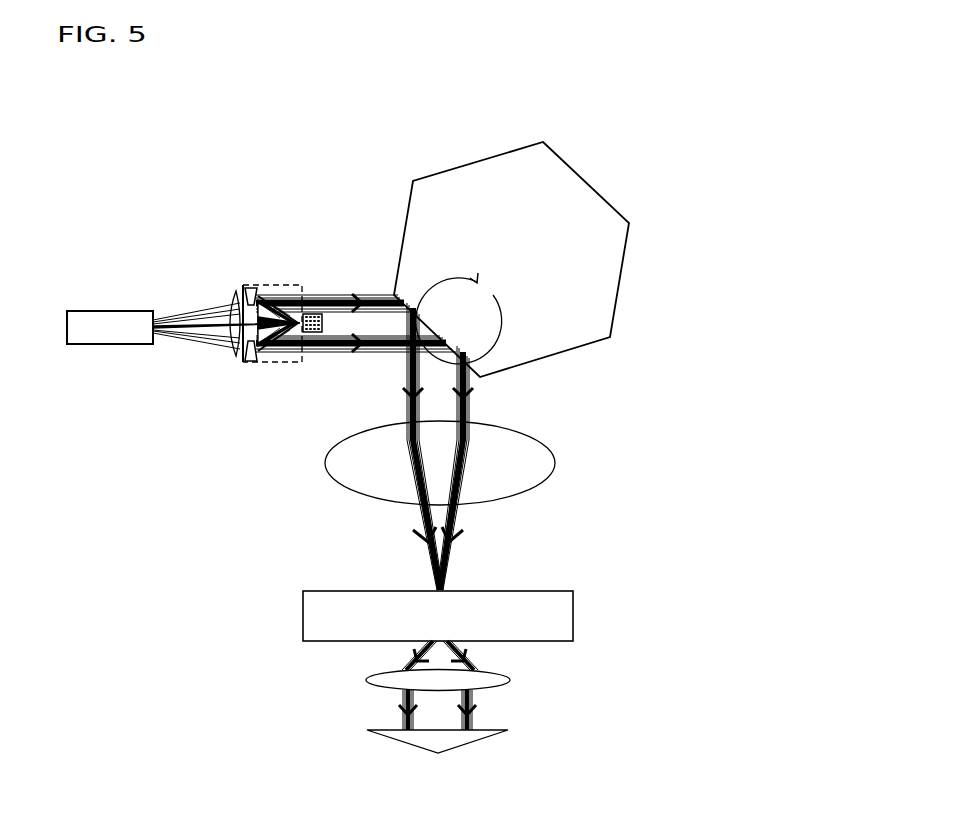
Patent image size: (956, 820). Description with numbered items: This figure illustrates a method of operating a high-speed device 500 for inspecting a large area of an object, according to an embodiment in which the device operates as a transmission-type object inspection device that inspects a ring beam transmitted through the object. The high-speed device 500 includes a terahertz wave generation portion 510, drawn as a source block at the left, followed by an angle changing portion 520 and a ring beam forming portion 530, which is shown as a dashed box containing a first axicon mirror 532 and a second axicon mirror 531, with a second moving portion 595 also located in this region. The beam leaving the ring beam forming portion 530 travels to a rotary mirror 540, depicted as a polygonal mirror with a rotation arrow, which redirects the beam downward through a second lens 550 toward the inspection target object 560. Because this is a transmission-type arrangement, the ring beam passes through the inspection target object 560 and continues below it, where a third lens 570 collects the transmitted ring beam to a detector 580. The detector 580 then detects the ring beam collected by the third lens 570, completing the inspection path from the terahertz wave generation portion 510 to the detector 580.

The high-speed device 500 is at (658, 98).
The terahertz wave generation portion 510 is at (112, 311).
The angle changing portion 520 is at (228, 303).
The ring beam forming portion 530 is at (289, 283).
The second axicon mirror 531 is at (252, 288).
The first axicon mirror 532 is at (287, 362).
The second moving portion 595 is at (313, 333).
The rotary mirror 540 is at (595, 193).
The second lens 550 is at (555, 465).
The inspection target object 560 is at (573, 617).
The third lens 570 is at (510, 680).
The detector 580 is at (508, 730).